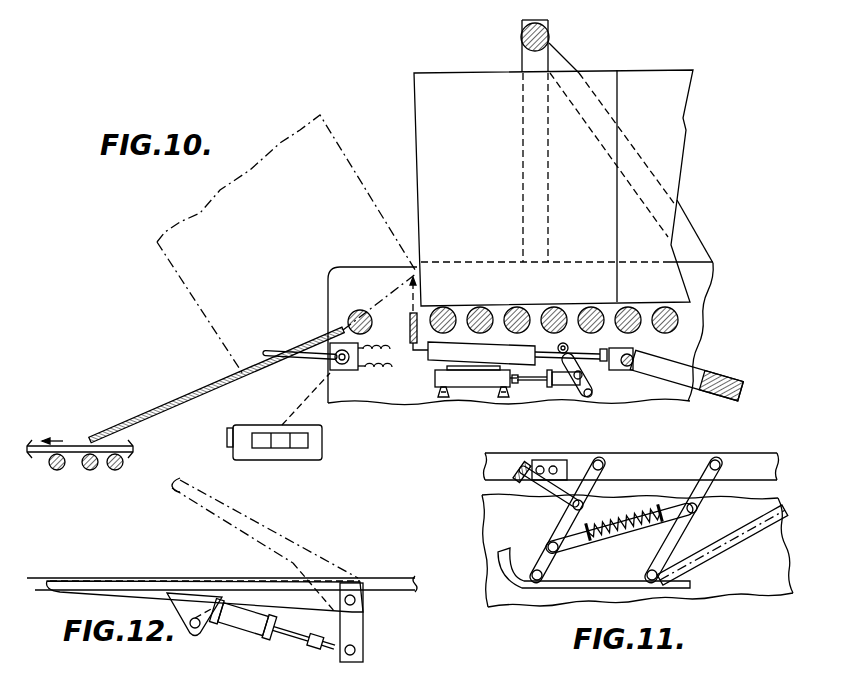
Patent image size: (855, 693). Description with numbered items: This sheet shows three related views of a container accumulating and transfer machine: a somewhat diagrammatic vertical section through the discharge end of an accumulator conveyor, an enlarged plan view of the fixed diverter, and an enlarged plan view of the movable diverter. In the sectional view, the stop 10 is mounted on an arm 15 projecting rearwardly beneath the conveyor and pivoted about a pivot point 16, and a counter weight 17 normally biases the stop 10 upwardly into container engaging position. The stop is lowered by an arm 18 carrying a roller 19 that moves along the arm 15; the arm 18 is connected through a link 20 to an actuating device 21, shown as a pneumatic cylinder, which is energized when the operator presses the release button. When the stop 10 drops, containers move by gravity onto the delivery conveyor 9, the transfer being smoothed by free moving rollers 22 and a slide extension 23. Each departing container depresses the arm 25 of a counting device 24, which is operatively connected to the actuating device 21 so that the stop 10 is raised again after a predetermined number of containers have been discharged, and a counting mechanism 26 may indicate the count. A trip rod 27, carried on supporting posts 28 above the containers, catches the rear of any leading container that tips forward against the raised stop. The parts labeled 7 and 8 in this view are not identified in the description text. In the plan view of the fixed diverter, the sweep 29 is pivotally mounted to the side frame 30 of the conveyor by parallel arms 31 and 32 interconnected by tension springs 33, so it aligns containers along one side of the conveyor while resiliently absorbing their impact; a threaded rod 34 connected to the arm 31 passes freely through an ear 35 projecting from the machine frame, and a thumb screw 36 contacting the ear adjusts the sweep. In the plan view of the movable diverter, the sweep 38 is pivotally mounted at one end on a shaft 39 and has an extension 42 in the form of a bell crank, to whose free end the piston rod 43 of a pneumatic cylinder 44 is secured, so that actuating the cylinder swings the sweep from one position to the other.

In FIG. 10, the frame 7 is at (713, 278).
In FIG. 10, the sack 8 is at (460, 78).
In FIG. 10, the delivery conveyor 9 is at (88, 470).
In FIG. 10, the stop 10 is at (410, 330).
In FIG. 10, the arm 15 is at (578, 352).
In FIG. 10, the pivot point 16 is at (639, 351).
In FIG. 10, the counter weight 17 is at (735, 371).
In FIG. 10, the arm 18 is at (595, 389).
In FIG. 10, the roller 19 is at (558, 345).
In FIG. 10, the link 20 is at (553, 385).
In FIG. 10, the actuating device 21 is at (463, 384).
In FIG. 10, the free moving rollers 22 is at (357, 311).
In FIG. 10, the slide extension 23 is at (230, 381).
In FIG. 10, the counting device 24 is at (350, 372).
In FIG. 10, the arm 25 is at (275, 345).
In FIG. 10, the counting mechanism 26 is at (322, 442).
In FIG. 10, the trip rod 27 is at (555, 41).
In FIG. 10, the supporting posts 28 is at (548, 172).
In FIG. 11, the fixed diverter or sweep 29 is at (719, 562).
In FIG. 11, the side frame 30 is at (730, 453).
In FIG. 11, the arm 31 is at (556, 524).
In FIG. 11, the arm 32 is at (686, 528).
In FIG. 11, the tension springs 33 is at (612, 540).
In FIG. 11, the threaded rod 34 is at (553, 502).
In FIG. 11, the ear 35 is at (540, 461).
In FIG. 11, the thumb screw 36 is at (521, 462).
In FIG. 12, the sweep 38 is at (250, 516).
In FIG. 12, the shaft 39 is at (357, 600).
In FIG. 12, the extension 42 is at (363, 626).
In FIG. 12, the piston rod 43 is at (307, 644).
In FIG. 12, the pneumatic cylinder 44 is at (251, 639).